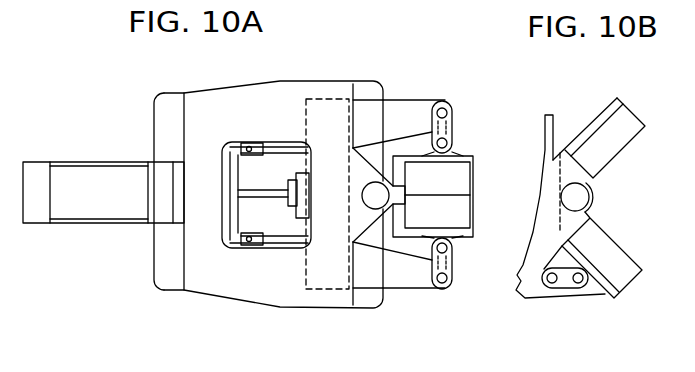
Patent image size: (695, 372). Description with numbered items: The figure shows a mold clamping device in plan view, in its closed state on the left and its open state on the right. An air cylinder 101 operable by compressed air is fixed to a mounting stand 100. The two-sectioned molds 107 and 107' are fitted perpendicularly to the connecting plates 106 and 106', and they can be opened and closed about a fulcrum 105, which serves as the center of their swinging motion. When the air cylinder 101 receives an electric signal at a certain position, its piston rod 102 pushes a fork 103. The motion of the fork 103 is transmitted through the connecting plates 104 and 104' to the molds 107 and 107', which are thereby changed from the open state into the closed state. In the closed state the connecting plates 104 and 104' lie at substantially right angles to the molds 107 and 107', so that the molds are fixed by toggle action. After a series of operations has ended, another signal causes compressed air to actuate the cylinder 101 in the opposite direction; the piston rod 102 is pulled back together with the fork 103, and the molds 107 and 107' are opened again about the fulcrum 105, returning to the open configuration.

In FIG. 10A, the mounting stand 100 is at (195, 114).
In FIG. 10A, the air cylinder 101 is at (93, 161).
In FIG. 10A, the piston rod 102 is at (268, 190).
In FIG. 10A, the fork 103 is at (412, 280).
In FIG. 10A, the connecting plate 104 is at (462, 109).
In FIG. 10A, the connecting plate 104' is at (463, 278).
In FIG. 10B, the connecting plate 104' is at (554, 305).
In FIG. 10A, the fulcrum 105 is at (362, 197).
In FIG. 10B, the fulcrum 105 is at (598, 194).
In FIG. 10A, the connecting plate 106 is at (436, 128).
In FIG. 10B, the connecting plate 106 is at (576, 115).
In FIG. 10A, the connecting plate 106' is at (430, 253).
In FIG. 10B, the connecting plate 106' is at (581, 303).
In FIG. 10A, the mold 107 is at (463, 189).
In FIG. 10B, the mold 107 is at (605, 116).
In FIG. 10A, the mold 107' is at (467, 211).
In FIG. 10B, the mold 107' is at (607, 277).